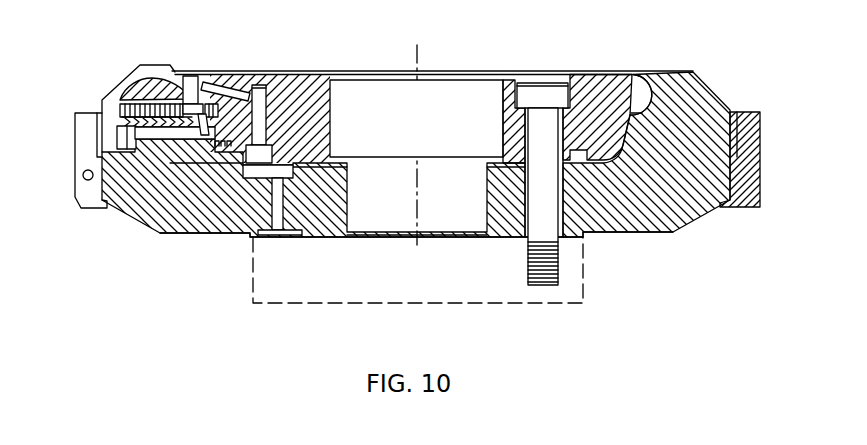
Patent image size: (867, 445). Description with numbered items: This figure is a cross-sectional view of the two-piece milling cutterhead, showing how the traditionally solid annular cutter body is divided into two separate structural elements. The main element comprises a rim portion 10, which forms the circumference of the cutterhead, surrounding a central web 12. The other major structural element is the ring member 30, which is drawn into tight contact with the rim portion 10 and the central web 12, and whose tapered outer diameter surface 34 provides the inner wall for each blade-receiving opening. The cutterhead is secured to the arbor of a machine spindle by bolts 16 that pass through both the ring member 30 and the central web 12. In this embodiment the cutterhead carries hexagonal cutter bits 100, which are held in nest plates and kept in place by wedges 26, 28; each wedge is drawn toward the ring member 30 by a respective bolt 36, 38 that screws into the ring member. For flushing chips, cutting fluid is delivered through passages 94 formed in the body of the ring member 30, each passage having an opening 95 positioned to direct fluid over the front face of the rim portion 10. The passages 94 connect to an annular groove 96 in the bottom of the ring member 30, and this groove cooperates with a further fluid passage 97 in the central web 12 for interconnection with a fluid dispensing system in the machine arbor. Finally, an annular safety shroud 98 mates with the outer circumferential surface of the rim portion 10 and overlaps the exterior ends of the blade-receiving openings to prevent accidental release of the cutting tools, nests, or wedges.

The rim portion 10 is at (688, 88).
The central web 12 is at (597, 210).
The bolts 16 is at (527, 90).
The wedge 26 is at (150, 148).
The wedge 28 is at (137, 92).
The ring member 30 is at (590, 90).
The tapered outer diameter surface 34 is at (634, 75).
The bolt 36 is at (166, 144).
The bolt 38 is at (123, 93).
The passages 94 is at (260, 105).
The opening 95 is at (203, 80).
The annular groove 96 is at (265, 157).
The fluid passage 97 is at (285, 210).
The annular safety shroud 98 is at (758, 130).
The hexagonal cutter bits 100 is at (143, 70).